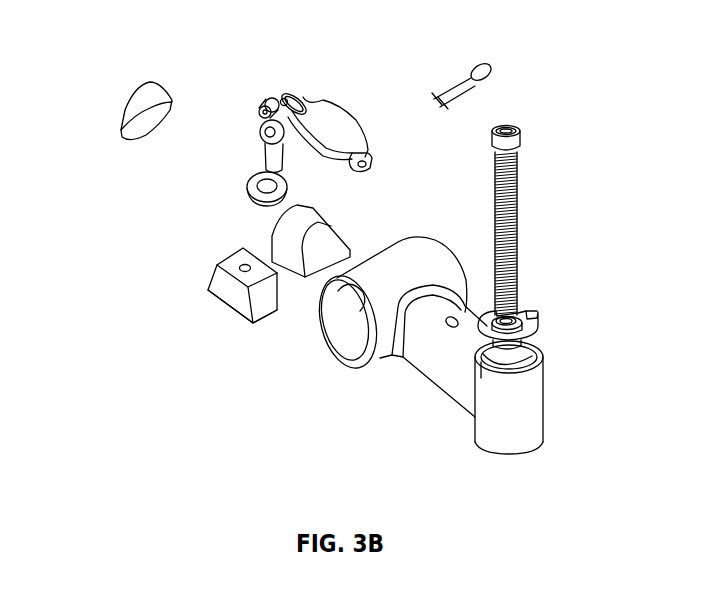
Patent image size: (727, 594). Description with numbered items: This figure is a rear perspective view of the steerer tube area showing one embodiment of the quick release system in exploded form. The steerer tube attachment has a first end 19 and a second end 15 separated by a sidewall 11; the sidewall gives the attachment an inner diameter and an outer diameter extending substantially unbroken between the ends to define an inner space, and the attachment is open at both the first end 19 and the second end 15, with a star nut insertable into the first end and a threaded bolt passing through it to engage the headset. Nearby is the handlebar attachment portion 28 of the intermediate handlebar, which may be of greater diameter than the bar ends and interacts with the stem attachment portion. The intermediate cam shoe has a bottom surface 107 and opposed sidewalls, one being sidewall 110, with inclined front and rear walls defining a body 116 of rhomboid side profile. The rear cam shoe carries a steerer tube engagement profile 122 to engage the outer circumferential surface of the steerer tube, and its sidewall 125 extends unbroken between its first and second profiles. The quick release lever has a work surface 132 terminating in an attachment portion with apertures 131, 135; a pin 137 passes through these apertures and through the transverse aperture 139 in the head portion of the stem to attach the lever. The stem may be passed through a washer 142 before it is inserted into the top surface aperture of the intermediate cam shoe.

The sidewall 11 is at (533, 430).
The second end 15 is at (507, 457).
The first end 19 is at (545, 348).
The handlebar attachment portion 28 is at (420, 253).
The bottom surface 107 is at (268, 325).
The sidewall 110 is at (217, 305).
The body 116 is at (208, 262).
The steerer tube engagement profile 122 is at (274, 227).
The sidewall 125 is at (283, 241).
The aperture 131 is at (281, 92).
The work surface 132 is at (320, 115).
The aperture 135 is at (258, 103).
The pin 137 is at (475, 87).
The aperture 139 is at (262, 135).
The washer 142 is at (281, 180).